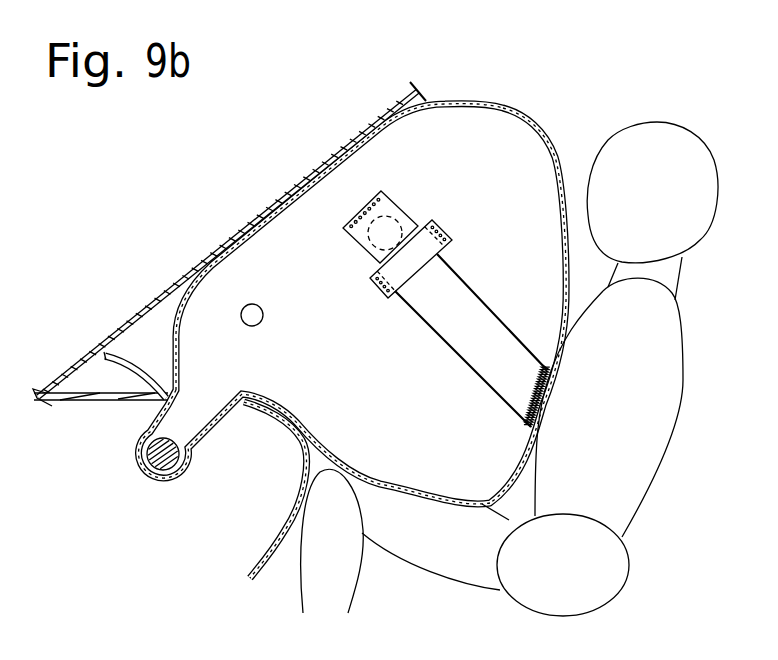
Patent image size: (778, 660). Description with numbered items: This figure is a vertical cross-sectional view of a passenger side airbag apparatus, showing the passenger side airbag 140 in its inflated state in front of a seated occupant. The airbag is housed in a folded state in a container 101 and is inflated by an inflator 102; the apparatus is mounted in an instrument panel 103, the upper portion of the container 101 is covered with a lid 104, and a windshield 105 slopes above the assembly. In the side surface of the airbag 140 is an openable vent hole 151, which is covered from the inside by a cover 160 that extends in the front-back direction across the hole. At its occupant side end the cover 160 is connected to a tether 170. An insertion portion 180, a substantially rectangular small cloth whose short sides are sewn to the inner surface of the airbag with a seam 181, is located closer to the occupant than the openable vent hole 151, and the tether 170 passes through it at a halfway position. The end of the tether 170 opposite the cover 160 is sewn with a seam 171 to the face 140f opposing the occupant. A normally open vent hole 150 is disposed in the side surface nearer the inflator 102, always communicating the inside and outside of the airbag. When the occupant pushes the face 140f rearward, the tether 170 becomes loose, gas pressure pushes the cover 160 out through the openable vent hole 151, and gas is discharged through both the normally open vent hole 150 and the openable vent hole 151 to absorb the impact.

The passenger side airbag 140 is at (521, 73).
The face opposing the occupant 140f is at (567, 185).
The normally open vent hole 150 is at (255, 303).
The openable vent hole 151 is at (397, 202).
The cover 160 is at (350, 243).
The tether 170 is at (463, 302).
The seam 171 is at (533, 402).
The insertion portion 180 is at (410, 270).
The seam 181 is at (440, 230).
The container 101 is at (200, 463).
The inflator 102 is at (137, 457).
The instrument panel 103 is at (297, 458).
The lid 104 is at (153, 350).
The windshield 105 is at (148, 302).